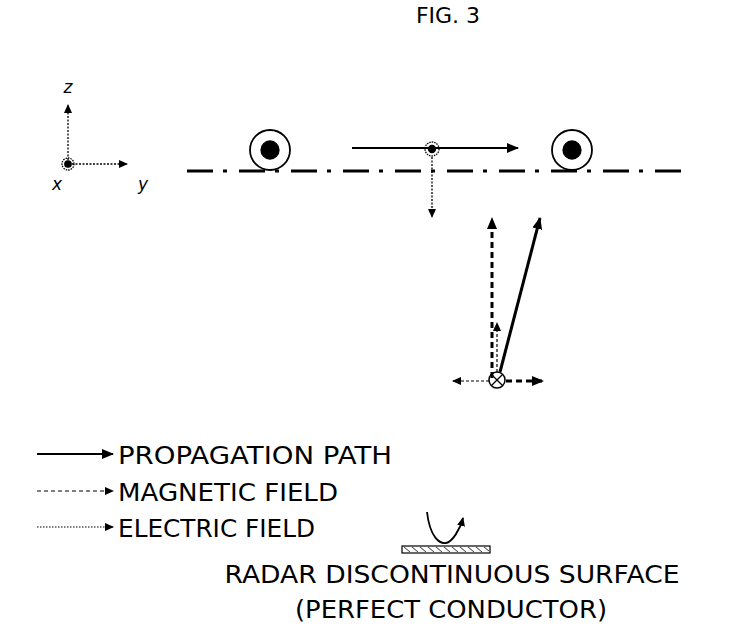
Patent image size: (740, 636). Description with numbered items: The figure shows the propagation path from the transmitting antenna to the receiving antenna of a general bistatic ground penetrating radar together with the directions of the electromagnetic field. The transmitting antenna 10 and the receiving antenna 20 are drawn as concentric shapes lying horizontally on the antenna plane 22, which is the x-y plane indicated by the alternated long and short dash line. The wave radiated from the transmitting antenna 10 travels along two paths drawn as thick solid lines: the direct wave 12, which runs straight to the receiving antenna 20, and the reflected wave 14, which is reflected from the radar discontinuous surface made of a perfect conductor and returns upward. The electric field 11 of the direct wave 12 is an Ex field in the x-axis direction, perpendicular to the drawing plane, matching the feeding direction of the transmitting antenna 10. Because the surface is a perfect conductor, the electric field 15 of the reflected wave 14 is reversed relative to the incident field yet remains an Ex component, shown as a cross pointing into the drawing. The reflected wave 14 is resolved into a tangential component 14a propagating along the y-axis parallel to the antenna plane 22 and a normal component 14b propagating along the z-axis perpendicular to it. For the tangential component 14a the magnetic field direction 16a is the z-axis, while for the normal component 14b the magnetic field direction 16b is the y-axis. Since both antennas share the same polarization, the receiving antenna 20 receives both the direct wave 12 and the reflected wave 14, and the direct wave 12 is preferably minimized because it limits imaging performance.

The transmitting antenna 10 is at (270, 130).
The electric field (Ex field) of the direct wave 11 is at (408, 104).
The direct wave 12 is at (476, 147).
The reflected wave 14 is at (533, 258).
The tangential component of the reflected wave 14a is at (519, 386).
The normal component of the reflected wave 14b is at (490, 297).
The electric field (Ex field) of the reflected wave 15 is at (472, 420).
The magnetic field direction of the tangential component 16a is at (538, 347).
The magnetic field direction of the normal component 16b is at (412, 382).
The receiving antenna 20 is at (581, 131).
The antenna plane 22 is at (355, 181).